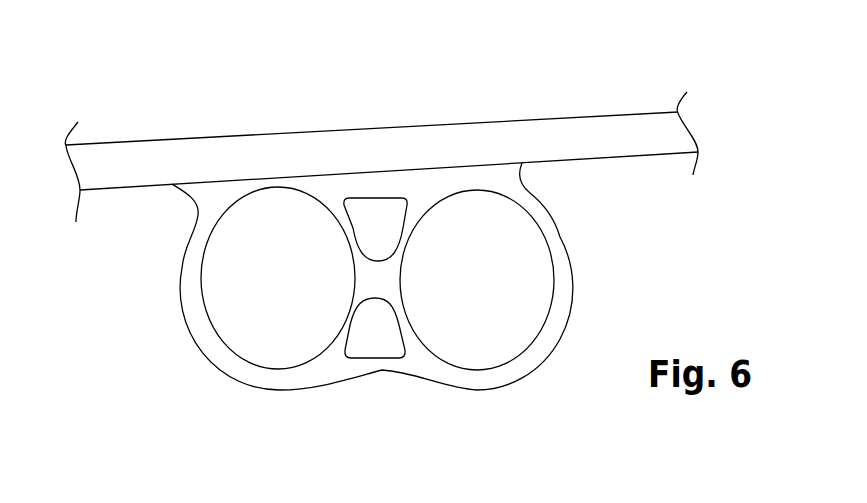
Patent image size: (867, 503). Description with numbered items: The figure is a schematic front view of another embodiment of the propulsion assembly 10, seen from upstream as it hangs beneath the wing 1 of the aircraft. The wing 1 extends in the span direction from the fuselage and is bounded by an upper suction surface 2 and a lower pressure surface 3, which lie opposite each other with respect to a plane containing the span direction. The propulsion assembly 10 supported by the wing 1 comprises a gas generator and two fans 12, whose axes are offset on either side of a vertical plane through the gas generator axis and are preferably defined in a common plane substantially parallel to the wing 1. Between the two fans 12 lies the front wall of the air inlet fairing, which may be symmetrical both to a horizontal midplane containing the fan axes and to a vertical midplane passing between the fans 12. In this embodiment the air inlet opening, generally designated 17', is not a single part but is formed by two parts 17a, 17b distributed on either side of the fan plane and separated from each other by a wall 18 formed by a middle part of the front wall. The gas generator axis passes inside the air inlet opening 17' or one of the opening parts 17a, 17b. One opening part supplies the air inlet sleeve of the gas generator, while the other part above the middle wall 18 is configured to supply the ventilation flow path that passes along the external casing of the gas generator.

The propulsion wing 1 is at (381, 171).
The upper suction surface 2 is at (125, 143).
The lower pressure surface 3 is at (121, 189).
The propulsion assembly 10 is at (592, 305).
The fan 12 is at (245, 298).
The air inlet opening part 17a is at (372, 218).
The air inlet opening part 17b is at (374, 328).
The air inlet opening 17' is at (456, 145).
The wall 18 is at (368, 277).